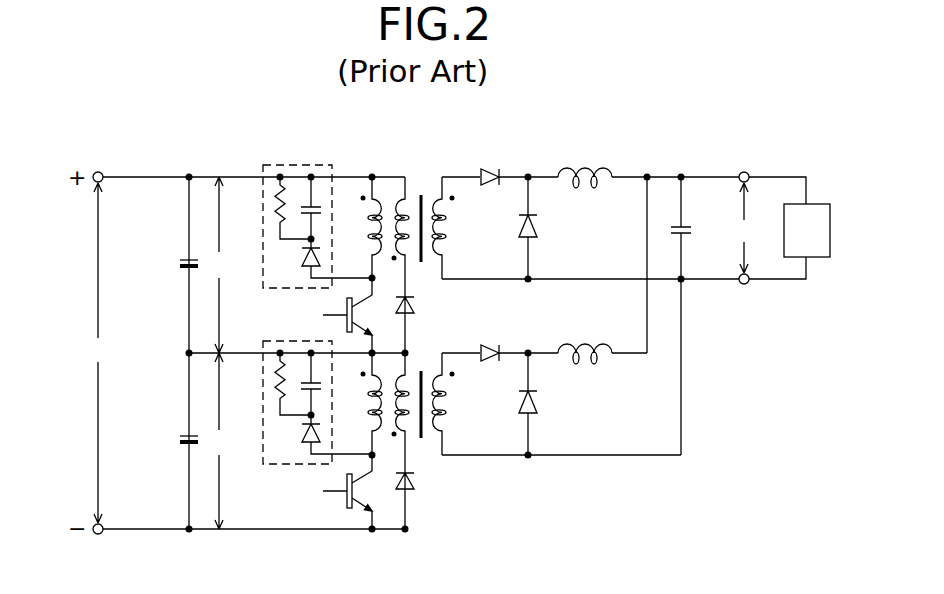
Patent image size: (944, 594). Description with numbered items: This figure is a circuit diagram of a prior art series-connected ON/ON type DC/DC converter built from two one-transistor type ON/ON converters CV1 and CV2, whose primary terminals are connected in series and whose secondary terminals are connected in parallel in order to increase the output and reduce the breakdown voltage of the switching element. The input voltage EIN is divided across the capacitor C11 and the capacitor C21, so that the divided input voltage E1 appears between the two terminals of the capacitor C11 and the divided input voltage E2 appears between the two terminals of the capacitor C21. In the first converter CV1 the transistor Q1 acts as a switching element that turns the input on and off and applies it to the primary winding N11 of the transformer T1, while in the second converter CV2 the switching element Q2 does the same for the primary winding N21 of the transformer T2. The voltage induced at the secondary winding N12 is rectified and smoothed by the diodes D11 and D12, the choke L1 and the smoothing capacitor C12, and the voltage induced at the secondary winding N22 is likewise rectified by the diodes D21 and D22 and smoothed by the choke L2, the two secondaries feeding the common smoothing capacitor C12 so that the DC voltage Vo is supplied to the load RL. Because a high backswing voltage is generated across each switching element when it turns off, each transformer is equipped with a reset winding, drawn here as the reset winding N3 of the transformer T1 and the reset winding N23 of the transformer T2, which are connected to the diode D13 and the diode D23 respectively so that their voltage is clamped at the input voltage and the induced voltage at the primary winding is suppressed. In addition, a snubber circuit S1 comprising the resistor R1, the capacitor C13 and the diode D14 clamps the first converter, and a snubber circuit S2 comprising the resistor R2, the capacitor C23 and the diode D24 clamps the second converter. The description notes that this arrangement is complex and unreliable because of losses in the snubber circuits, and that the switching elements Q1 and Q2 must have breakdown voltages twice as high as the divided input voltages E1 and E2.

The input voltage EIN is at (99, 353).
The capacitor C11 is at (168, 266).
The capacitor C21 is at (168, 444).
The divided input voltage E1 is at (222, 265).
The divided input voltage E2 is at (223, 441).
The snubber circuit S1 is at (295, 165).
The snubber circuit S2 is at (283, 466).
The resistor R1 is at (272, 206).
The resistor R2 is at (272, 382).
The capacitor C13 is at (314, 205).
The capacitor C23 is at (315, 390).
The diode D14 is at (320, 259).
The diode D24 is at (320, 434).
The transistor Q1 is at (349, 301).
The switching element Q2 is at (348, 476).
The diode D13 is at (421, 325).
The diode D23 is at (421, 501).
The transformer T1 is at (426, 211).
The transformer T2 is at (426, 390).
The primary winding N11 is at (358, 227).
The primary winding N21 is at (357, 403).
The reset winding N3 is at (407, 262).
The reset winding N23 is at (407, 438).
The secondary winding N12 is at (458, 228).
The secondary winding N22 is at (458, 404).
The one-transistor type ON/ON converter CV1 is at (435, 156).
The one-transistor type ON/ON converter CV2 is at (468, 508).
The diode D11 is at (496, 166).
The diode D21 is at (496, 342).
The diode D12 is at (545, 228).
The diode D22 is at (545, 404).
The choke L1 is at (585, 194).
The choke L2 is at (585, 370).
The smoothing capacitor C12 is at (697, 232).
The DC voltage Vo is at (746, 228).
The load RL is at (807, 230).